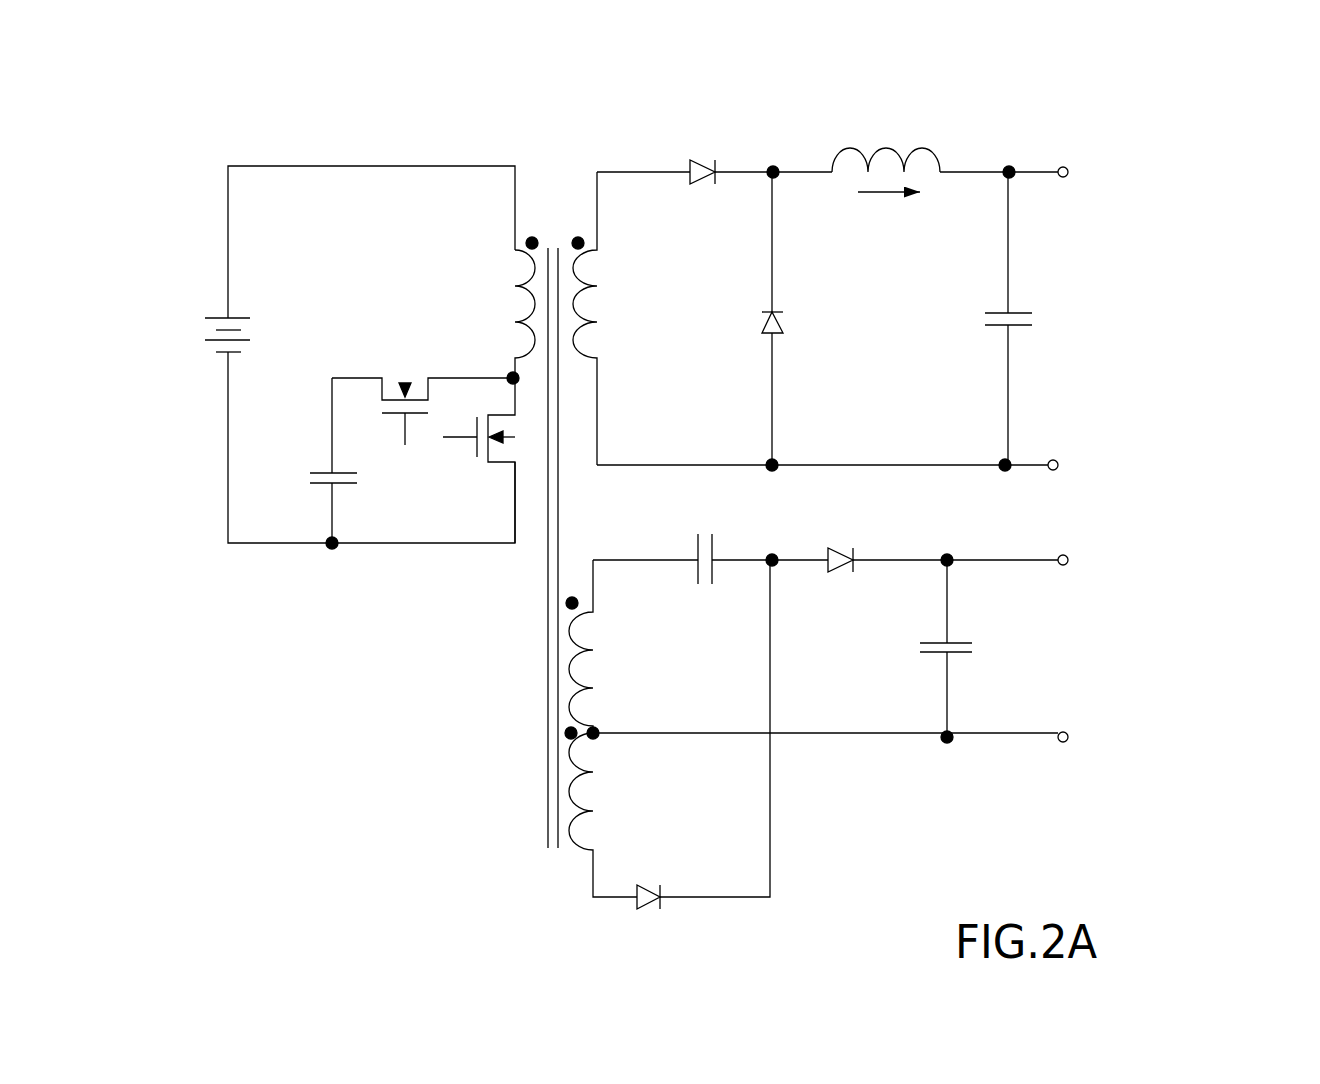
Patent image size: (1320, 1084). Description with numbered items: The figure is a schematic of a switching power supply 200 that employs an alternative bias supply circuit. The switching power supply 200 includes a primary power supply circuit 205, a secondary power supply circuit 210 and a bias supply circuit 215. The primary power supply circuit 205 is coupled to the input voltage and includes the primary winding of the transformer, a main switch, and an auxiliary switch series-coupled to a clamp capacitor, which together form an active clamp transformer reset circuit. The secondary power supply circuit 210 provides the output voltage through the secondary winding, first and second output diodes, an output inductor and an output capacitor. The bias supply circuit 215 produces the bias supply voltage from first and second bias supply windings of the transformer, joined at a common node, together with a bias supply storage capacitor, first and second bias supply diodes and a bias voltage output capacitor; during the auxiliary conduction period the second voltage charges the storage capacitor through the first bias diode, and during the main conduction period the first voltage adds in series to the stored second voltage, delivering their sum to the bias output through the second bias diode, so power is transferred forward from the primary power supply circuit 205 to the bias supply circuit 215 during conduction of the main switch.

The switching power supply 200 is at (1200, 195).
The primary power supply circuit 205 is at (418, 155).
The secondary power supply circuit 210 is at (972, 148).
The bias supply circuit 215 is at (1048, 538).